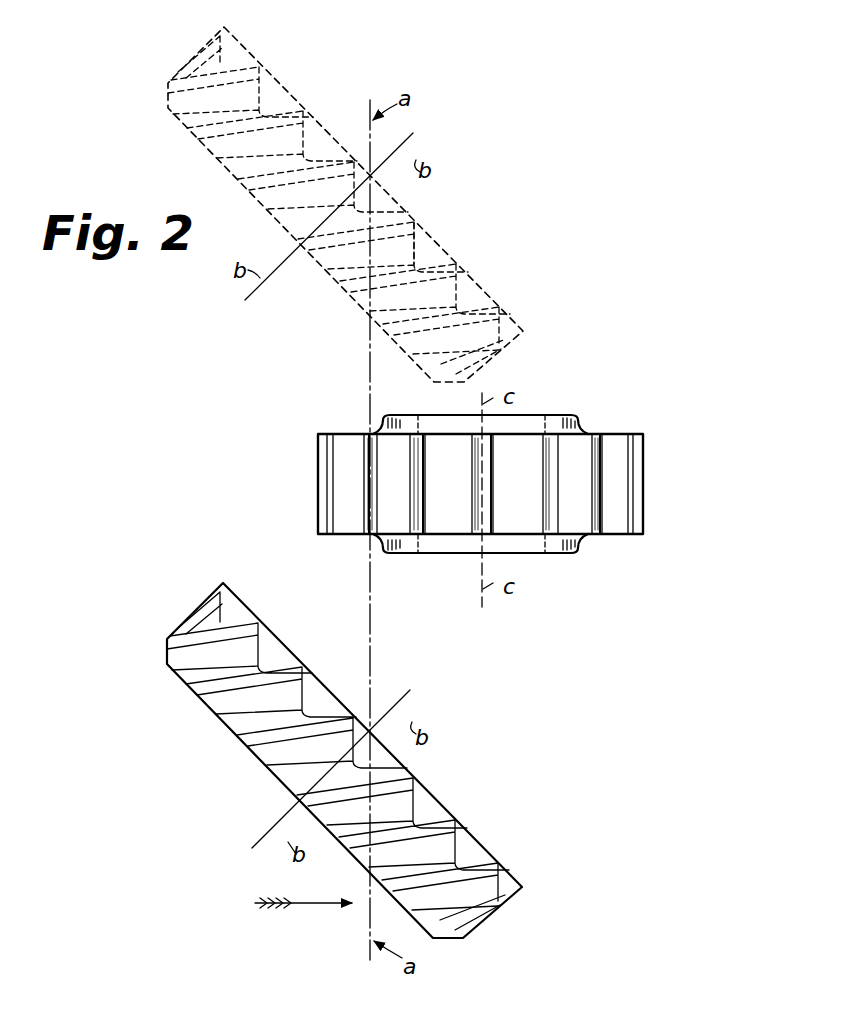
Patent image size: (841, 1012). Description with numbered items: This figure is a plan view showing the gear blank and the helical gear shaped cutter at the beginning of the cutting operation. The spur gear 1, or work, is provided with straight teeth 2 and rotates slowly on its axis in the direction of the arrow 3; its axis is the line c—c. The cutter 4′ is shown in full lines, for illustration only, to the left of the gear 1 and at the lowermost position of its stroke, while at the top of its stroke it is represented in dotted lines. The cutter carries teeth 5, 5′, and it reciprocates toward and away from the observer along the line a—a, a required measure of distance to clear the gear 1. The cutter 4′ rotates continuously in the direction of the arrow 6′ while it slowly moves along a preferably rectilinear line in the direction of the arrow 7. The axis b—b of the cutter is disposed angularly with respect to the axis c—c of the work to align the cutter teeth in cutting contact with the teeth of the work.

The spur gear 1 is at (558, 417).
The straight teeth 2 is at (623, 445).
The arrow 3 is at (614, 487).
The cutter in first position 4′ is at (229, 731).
The teeth 5 is at (410, 313).
The teeth of cutter in first position 5′ is at (284, 683).
The arrow 6′ is at (222, 667).
The arrow 7 is at (314, 900).